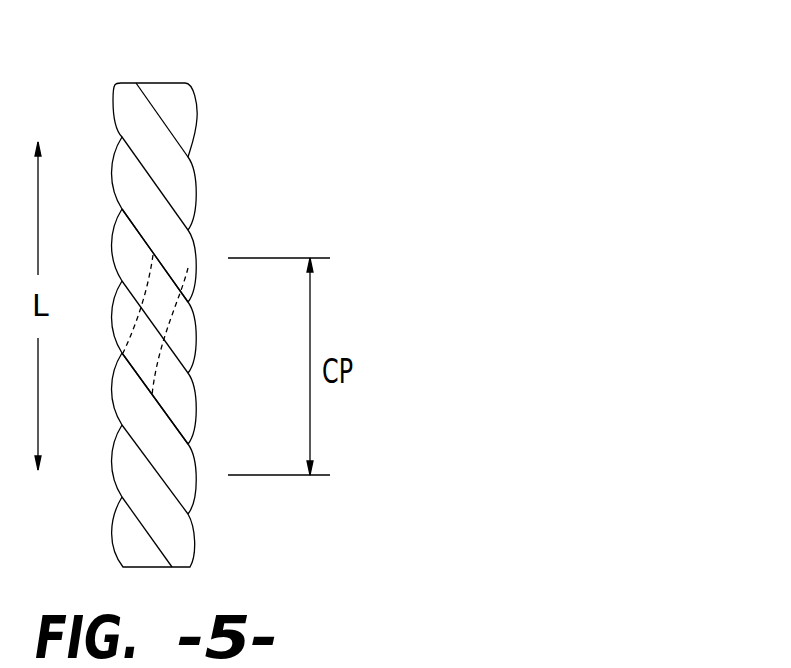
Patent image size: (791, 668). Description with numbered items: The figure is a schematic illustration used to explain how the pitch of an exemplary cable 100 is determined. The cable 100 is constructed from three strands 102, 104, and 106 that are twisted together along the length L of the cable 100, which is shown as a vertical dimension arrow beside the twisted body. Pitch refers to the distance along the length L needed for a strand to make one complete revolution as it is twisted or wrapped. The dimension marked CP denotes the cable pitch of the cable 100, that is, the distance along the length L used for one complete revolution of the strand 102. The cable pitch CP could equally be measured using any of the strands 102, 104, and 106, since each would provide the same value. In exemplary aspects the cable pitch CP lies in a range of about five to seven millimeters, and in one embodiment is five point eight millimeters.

The cable 100 is at (270, 126).
The strand 102 is at (176, 247).
The strand 104 is at (180, 334).
The strand 106 is at (178, 406).